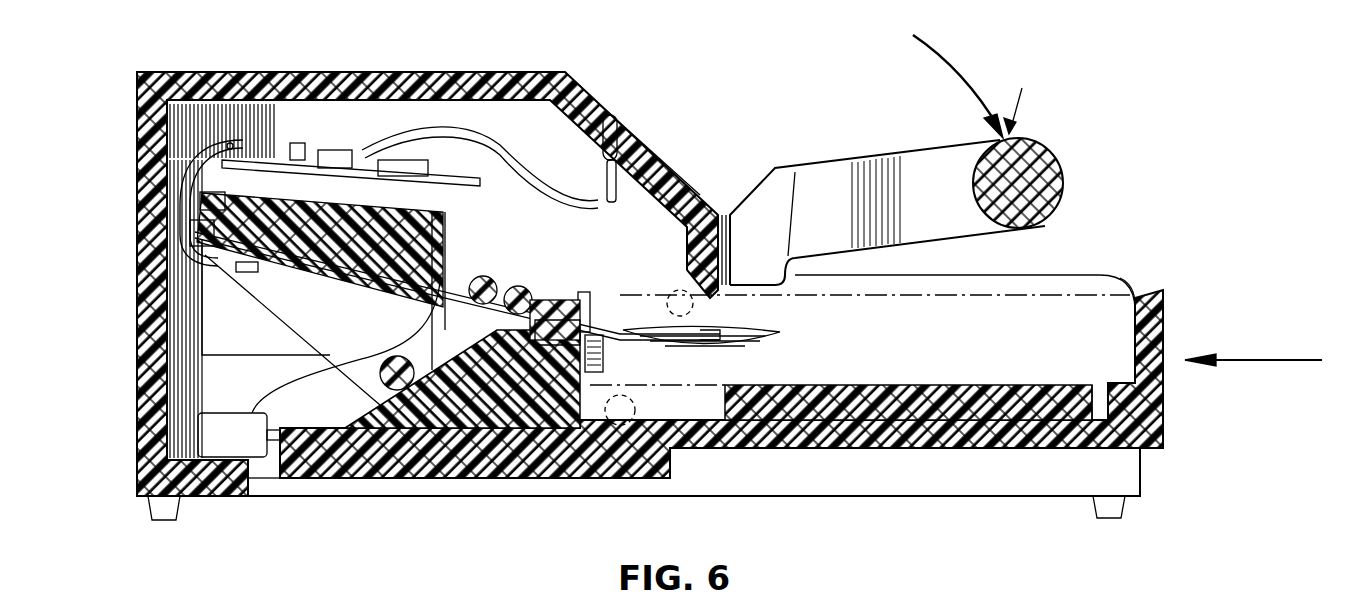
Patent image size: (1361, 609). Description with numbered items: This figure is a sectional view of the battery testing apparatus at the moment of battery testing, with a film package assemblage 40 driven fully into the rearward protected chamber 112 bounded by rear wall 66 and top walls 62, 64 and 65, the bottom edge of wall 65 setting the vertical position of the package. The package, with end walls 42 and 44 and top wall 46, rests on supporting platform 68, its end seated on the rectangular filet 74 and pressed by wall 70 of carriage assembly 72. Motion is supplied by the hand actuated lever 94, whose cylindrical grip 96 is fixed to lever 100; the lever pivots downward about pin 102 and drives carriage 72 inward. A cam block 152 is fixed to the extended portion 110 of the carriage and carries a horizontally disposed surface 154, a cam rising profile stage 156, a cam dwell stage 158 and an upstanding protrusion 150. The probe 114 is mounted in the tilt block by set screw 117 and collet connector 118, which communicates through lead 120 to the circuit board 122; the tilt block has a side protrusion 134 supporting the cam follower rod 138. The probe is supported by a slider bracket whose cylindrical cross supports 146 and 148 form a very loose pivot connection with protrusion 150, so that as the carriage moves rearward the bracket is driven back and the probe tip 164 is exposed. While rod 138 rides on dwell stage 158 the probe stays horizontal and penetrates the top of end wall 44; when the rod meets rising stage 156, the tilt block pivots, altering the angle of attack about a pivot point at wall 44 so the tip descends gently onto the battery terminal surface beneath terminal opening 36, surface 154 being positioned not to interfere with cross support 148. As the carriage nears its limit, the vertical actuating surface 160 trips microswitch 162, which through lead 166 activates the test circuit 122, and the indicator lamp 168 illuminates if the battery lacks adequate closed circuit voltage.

The terminal opening 36 is at (752, 325).
The package assemblage 40 is at (1085, 318).
The end wall 42 is at (1135, 298).
The end wall 44 is at (582, 290).
The top wall 46 is at (1037, 292).
The top wall 62 is at (398, 71).
The top wall 64 is at (672, 190).
The top wall 65 is at (725, 240).
The rear wall 66 is at (145, 178).
The supporting platform 68 is at (988, 383).
The wall of carriage assembly 70 is at (1160, 335).
The carriage assembly 72 is at (1060, 445).
The seating filet 74 is at (1108, 392).
The hand actuated lever 94 is at (970, 86).
The cylindrical grip 96 is at (1036, 140).
The lever 100 is at (838, 180).
The pin 102 is at (678, 290).
The extended portion of carriage 110 is at (496, 480).
The chamber 112 is at (545, 131).
The probe 114 is at (598, 320).
The set screw 117 is at (265, 282).
The collet connector 118 is at (210, 270).
The lead 120 is at (195, 168).
The circuit board 122 is at (392, 128).
The side protrusion 134 is at (305, 322).
The cam follower rod 138 is at (400, 356).
The cross support 146 is at (480, 278).
The cross support 148 is at (547, 296).
The upstanding protrusion 150 is at (516, 286).
The cam block 152 is at (590, 370).
The horizontally disposed surface 154 is at (540, 345).
The cam rising profile surface 156 is at (372, 405).
The cam dwell surface 158 is at (289, 428).
The vertical actuating surface 160 is at (270, 460).
The microswitch 162 is at (225, 420).
The tip 164 is at (720, 325).
The lead 166 is at (285, 380).
The indicator lamp 168 is at (614, 122).